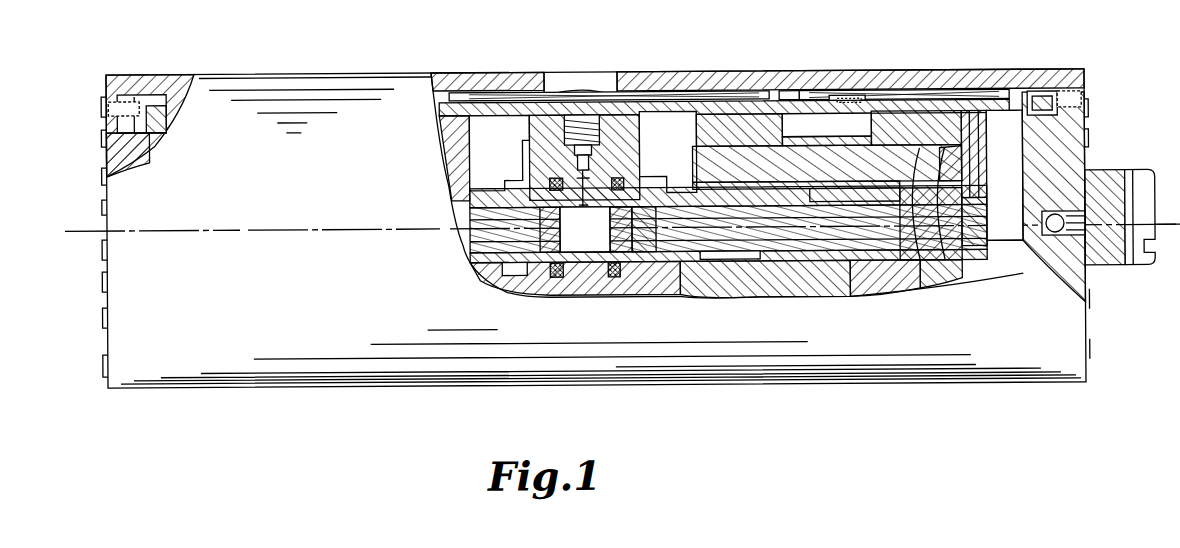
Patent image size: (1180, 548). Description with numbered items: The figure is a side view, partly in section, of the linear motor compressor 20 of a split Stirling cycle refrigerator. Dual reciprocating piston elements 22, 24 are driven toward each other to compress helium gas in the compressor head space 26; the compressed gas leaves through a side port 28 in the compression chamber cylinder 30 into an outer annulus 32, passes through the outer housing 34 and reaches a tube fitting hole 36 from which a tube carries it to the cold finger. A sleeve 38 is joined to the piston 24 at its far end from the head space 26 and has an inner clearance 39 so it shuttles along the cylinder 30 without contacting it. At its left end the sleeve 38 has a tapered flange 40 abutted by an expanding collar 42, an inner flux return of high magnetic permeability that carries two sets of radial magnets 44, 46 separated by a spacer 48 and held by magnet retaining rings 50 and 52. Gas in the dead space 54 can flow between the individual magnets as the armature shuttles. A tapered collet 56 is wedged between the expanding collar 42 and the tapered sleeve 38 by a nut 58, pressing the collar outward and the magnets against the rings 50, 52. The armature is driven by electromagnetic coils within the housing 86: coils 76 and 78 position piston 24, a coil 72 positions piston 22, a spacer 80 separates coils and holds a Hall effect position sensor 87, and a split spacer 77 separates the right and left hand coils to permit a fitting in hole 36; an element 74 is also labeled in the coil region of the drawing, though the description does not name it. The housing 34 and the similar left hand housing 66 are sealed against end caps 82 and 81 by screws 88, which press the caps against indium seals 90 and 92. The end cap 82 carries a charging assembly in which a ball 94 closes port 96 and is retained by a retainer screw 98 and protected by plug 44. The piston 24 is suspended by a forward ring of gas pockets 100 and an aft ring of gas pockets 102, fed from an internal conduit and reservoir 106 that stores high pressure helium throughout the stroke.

The linear motor compressor 20 is at (293, 395).
The piston element 22 is at (490, 205).
The piston element 24 is at (583, 262).
The compressor head space 26 is at (583, 247).
The side port 28 is at (591, 204).
The compression chamber cylinder 30 is at (720, 252).
The outer annulus 32 is at (553, 165).
The outer housing 34 is at (625, 127).
The tube fitting hole 36 is at (575, 115).
The sleeve 38 is at (933, 190).
The inner clearance 39 is at (817, 248).
The tapered flange 40 is at (693, 168).
The expanding collar 42 is at (962, 153).
The radial magnets 44 is at (708, 138).
The radial magnets 46 is at (962, 133).
The spacer 48 is at (810, 140).
The magnet retaining ring 50 is at (693, 120).
The magnet retaining ring 52 is at (963, 113).
The dead space 54 is at (992, 196).
The tapered collet 56 is at (917, 240).
The nut 58 is at (920, 213).
The left hand housing 66 is at (527, 107).
The coil 72 is at (497, 92).
The thin plate 74 is at (667, 91).
The coil 76 is at (738, 90).
The spacer 77 is at (595, 93).
The coil 78 is at (908, 90).
The spacer 80 is at (853, 98).
The end cap 81 is at (118, 154).
The end cap 82 is at (1088, 173).
The housing 86 is at (810, 72).
The Hall effect position sensor 87 is at (830, 97).
The screws 88 is at (125, 97).
The indium seal 90 is at (177, 92).
The indium seal 92 is at (1028, 90).
The ball 94 is at (1040, 232).
The port 96 is at (1047, 224).
The retainer screw 98 is at (1093, 262).
The forward ring of gas pockets 100 is at (640, 252).
The aft ring of gas pockets 102 is at (778, 242).
The internal conduit and reservoir 106 is at (745, 244).